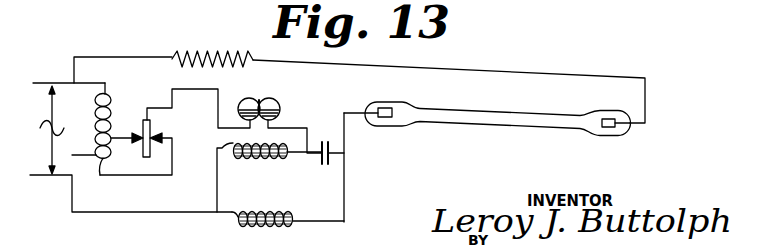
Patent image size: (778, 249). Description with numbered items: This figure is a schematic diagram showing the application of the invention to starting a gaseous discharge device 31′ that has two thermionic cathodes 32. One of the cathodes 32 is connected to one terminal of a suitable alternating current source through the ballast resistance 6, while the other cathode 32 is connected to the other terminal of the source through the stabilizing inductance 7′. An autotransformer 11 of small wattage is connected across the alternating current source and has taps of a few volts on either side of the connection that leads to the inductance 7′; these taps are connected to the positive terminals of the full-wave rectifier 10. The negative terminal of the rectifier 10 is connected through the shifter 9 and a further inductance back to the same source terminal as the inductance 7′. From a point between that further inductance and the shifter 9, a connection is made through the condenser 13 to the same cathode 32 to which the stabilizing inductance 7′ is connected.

The ballast resistance 6 is at (194, 58).
The autotransformer 11 is at (108, 112).
The full-wave rectifier 10 is at (152, 130).
The shifter 9 is at (270, 100).
The condenser 13 is at (325, 141).
The stabilizing inductance 7′ is at (263, 226).
The gaseous discharge device 31′ is at (478, 125).
The thermionic cathodes 32 is at (384, 118).